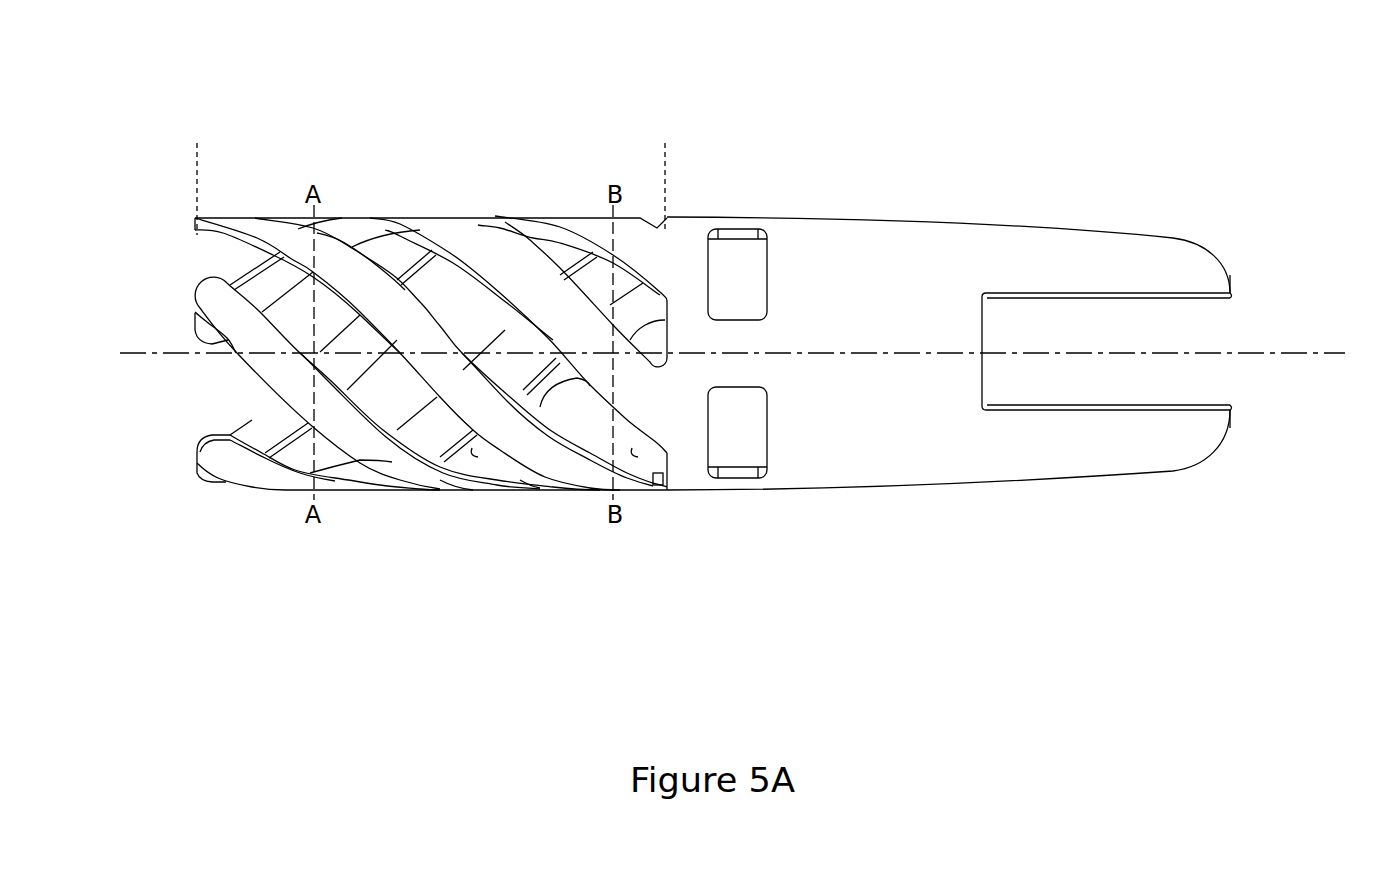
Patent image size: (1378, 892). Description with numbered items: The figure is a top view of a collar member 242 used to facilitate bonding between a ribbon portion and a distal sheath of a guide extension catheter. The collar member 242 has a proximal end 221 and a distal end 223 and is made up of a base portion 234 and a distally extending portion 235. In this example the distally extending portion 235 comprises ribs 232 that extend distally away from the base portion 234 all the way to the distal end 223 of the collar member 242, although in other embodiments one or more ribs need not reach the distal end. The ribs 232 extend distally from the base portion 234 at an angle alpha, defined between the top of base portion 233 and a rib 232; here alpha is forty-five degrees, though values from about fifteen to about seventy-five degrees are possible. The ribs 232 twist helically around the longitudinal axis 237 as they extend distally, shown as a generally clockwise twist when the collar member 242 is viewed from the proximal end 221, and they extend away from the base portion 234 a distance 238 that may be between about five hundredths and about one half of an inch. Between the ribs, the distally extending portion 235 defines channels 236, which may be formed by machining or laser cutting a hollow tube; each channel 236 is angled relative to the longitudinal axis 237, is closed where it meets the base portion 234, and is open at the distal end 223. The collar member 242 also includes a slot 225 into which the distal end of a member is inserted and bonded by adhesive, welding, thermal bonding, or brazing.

The proximal end 221 is at (1256, 297).
The distal end 223 is at (146, 258).
The slot 225 is at (1197, 383).
The ribs 232 is at (330, 248).
The top of base portion 233 is at (669, 338).
The base portion 234 is at (883, 237).
The distally extending portion 235 is at (442, 538).
The channels 236 is at (477, 455).
The longitudinal axis 237 is at (133, 357).
The distance 238 is at (665, 155).
The collar member 242 is at (828, 98).